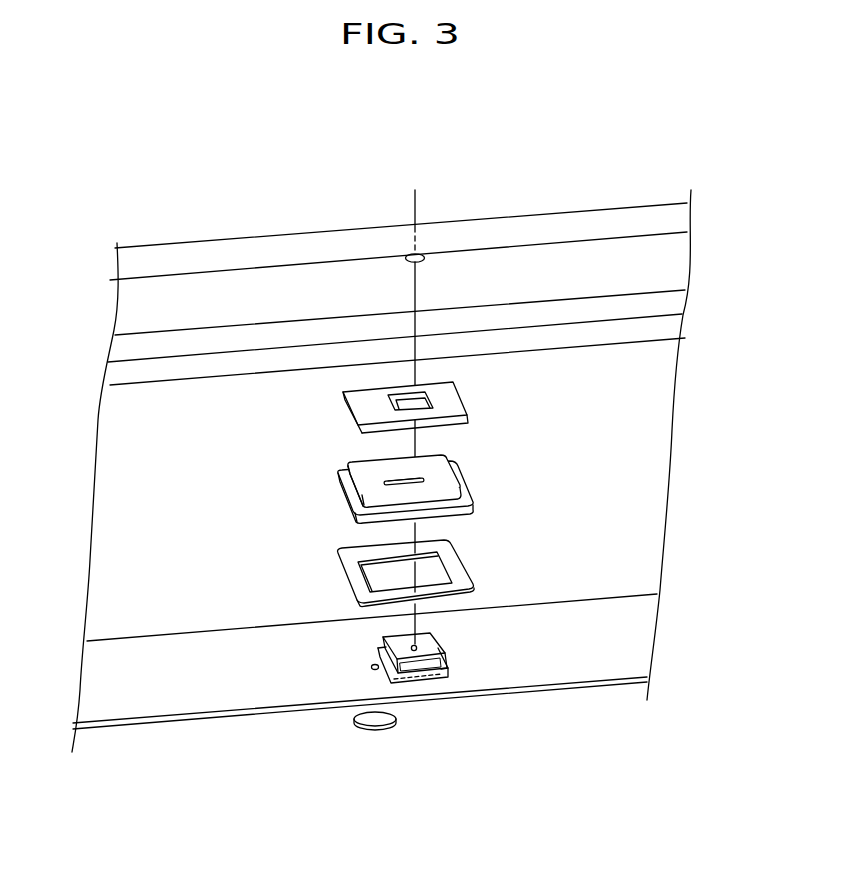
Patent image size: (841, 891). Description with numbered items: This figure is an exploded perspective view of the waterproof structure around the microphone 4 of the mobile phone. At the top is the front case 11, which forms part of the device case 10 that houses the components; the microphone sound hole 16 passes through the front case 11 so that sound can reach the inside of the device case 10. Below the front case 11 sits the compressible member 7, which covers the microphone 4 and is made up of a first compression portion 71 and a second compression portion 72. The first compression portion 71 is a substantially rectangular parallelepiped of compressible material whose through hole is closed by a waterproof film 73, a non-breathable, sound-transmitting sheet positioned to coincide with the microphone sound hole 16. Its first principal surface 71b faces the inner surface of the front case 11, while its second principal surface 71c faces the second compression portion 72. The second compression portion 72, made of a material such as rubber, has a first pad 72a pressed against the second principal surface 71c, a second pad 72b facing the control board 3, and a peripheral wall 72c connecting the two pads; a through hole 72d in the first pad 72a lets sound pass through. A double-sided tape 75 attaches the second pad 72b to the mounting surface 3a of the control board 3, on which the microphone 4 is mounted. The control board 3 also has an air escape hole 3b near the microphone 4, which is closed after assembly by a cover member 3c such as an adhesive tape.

The control board 3 is at (381, 501).
The mounting surface 3a is at (535, 620).
The air escape hole 3b is at (372, 670).
The cover member 3c is at (383, 725).
The microphone 4 is at (460, 643).
The compressible member 7 is at (426, 404).
The device case 10 is at (397, 273).
The front case 11 is at (563, 236).
The microphone sound hole 16 is at (418, 254).
The first compression portion 71 is at (409, 365).
The first principal surface 71b is at (366, 400).
The second principal surface 71c is at (348, 412).
The second compression portion 72 is at (416, 479).
The first pad 72a is at (443, 482).
The second pad 72b is at (352, 511).
The peripheral wall 72c is at (352, 490).
The through hole 72d is at (423, 477).
The waterproof film 73 is at (434, 397).
The double-sided tape 75 is at (355, 568).